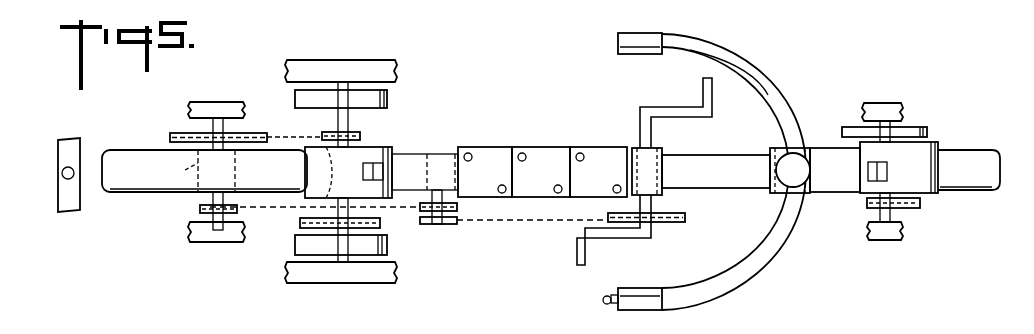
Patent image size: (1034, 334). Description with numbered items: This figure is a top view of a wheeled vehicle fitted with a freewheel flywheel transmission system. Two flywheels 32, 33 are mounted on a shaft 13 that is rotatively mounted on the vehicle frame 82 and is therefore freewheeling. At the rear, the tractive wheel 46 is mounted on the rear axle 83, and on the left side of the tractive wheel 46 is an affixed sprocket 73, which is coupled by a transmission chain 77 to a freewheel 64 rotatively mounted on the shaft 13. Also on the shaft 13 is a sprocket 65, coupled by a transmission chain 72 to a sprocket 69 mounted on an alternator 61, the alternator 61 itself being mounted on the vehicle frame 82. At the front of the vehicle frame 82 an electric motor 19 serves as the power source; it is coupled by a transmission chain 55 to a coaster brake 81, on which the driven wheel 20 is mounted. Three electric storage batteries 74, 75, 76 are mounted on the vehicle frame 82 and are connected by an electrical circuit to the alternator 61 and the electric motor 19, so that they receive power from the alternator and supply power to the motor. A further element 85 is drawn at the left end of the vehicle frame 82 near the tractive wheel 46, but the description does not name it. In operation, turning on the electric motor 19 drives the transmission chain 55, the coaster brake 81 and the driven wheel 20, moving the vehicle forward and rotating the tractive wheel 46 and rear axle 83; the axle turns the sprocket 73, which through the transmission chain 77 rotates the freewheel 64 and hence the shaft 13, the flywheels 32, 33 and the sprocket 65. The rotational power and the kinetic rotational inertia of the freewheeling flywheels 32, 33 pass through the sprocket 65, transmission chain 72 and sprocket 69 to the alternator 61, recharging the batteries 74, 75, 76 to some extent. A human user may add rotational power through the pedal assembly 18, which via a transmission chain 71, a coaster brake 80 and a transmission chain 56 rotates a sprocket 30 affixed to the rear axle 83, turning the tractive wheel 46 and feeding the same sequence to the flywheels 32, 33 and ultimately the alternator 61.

The shaft 13 is at (338, 112).
The pedal assembly 18 is at (676, 223).
The electric motor 19 is at (928, 160).
The driven wheel 20 is at (985, 152).
The sprocket 30 is at (200, 207).
The flywheel 32 is at (388, 98).
The flywheel 33 is at (315, 245).
The tractive wheel 46 is at (122, 183).
The transmission chain 55 is at (912, 210).
The transmission chain 56 is at (295, 247).
The alternator 61 is at (310, 163).
The freewheel 64 is at (362, 136).
The sprocket 65 is at (300, 222).
The sprocket 69 is at (396, 223).
The transmission chain 71 is at (473, 222).
The transmission chain 72 is at (330, 225).
The sprocket 73 is at (172, 137).
The electric storage battery 74 is at (595, 152).
The electric storage battery 75 is at (536, 152).
The electric storage battery 76 is at (477, 152).
The transmission chain 77 is at (270, 140).
The coaster brake 80 is at (434, 225).
The coaster brake 81 is at (868, 210).
The vehicle frame 82 is at (65, 140).
The rear axle 83 is at (175, 171).
The pin 85 is at (74, 168).